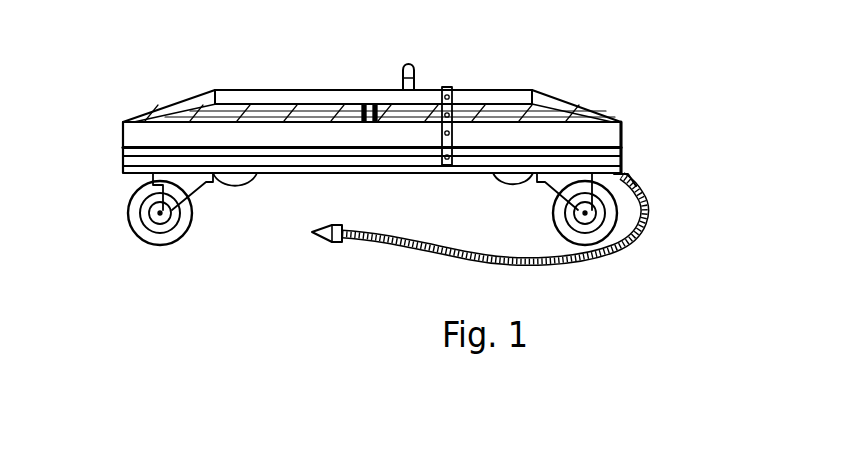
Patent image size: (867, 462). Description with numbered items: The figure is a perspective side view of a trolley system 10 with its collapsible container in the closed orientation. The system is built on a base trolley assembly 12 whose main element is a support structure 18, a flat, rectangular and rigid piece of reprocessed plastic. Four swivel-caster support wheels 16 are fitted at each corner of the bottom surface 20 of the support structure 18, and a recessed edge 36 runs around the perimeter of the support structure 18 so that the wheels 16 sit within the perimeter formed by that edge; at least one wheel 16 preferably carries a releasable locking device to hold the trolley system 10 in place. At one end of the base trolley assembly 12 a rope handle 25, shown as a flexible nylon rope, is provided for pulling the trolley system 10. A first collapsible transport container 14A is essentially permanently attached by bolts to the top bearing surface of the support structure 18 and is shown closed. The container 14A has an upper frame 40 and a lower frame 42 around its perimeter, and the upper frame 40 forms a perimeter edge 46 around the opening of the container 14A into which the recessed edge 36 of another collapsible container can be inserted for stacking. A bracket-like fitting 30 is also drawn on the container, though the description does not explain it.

The trolley system 10 is at (394, 153).
The base trolley assembly 12 is at (302, 173).
The first collapsible transport container 14A is at (645, 123).
The swivel-caster support wheels 16 is at (170, 243).
The support structure 18 is at (627, 177).
The bottom surface 20 is at (397, 195).
The rope handle 25 is at (622, 257).
The mounting bracket with hook 30 is at (415, 68).
The recessed edge 36 is at (120, 174).
The upper frame 40 is at (130, 135).
The lower frame 42 is at (131, 155).
The perimeter edge 46 is at (275, 89).